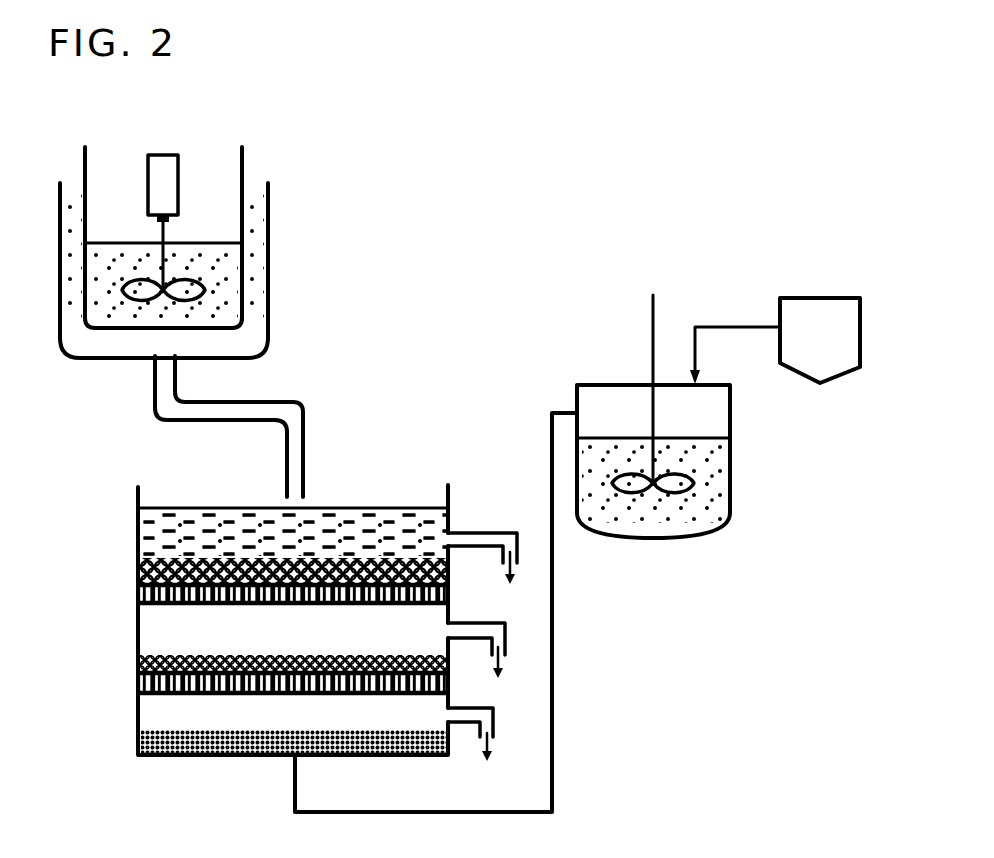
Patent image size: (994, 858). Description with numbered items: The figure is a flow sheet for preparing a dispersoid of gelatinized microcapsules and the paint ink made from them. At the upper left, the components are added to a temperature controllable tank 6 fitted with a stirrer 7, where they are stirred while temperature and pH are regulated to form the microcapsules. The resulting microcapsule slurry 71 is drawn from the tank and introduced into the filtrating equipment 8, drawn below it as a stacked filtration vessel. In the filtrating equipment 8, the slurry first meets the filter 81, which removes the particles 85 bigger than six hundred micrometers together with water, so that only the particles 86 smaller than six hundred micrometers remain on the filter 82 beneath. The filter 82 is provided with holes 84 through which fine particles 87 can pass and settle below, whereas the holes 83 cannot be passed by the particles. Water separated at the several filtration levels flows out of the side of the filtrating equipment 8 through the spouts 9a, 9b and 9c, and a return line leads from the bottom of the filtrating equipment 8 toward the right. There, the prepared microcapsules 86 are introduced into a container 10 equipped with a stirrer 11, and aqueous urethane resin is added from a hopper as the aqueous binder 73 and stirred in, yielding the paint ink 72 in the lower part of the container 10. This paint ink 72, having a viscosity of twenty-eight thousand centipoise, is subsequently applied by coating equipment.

The temperature controllable tank 6 is at (268, 278).
The stirrer 7 is at (163, 167).
The microcapsule slurry 71 is at (104, 320).
The filtrating equipment 8 is at (223, 757).
The filter 81 is at (150, 595).
The filter 82 is at (177, 697).
The holes 83 is at (165, 603).
The holes 84 is at (350, 694).
The particles 85 is at (407, 560).
The particles 86 is at (172, 657).
The fine particles 87 is at (165, 738).
The spout 9a is at (503, 533).
The spout 9b is at (507, 626).
The spout 9c is at (494, 722).
The container 10 is at (730, 462).
The stirrer 11 is at (648, 313).
The paint ink 72 is at (675, 527).
The aqueous binder 73 is at (842, 350).